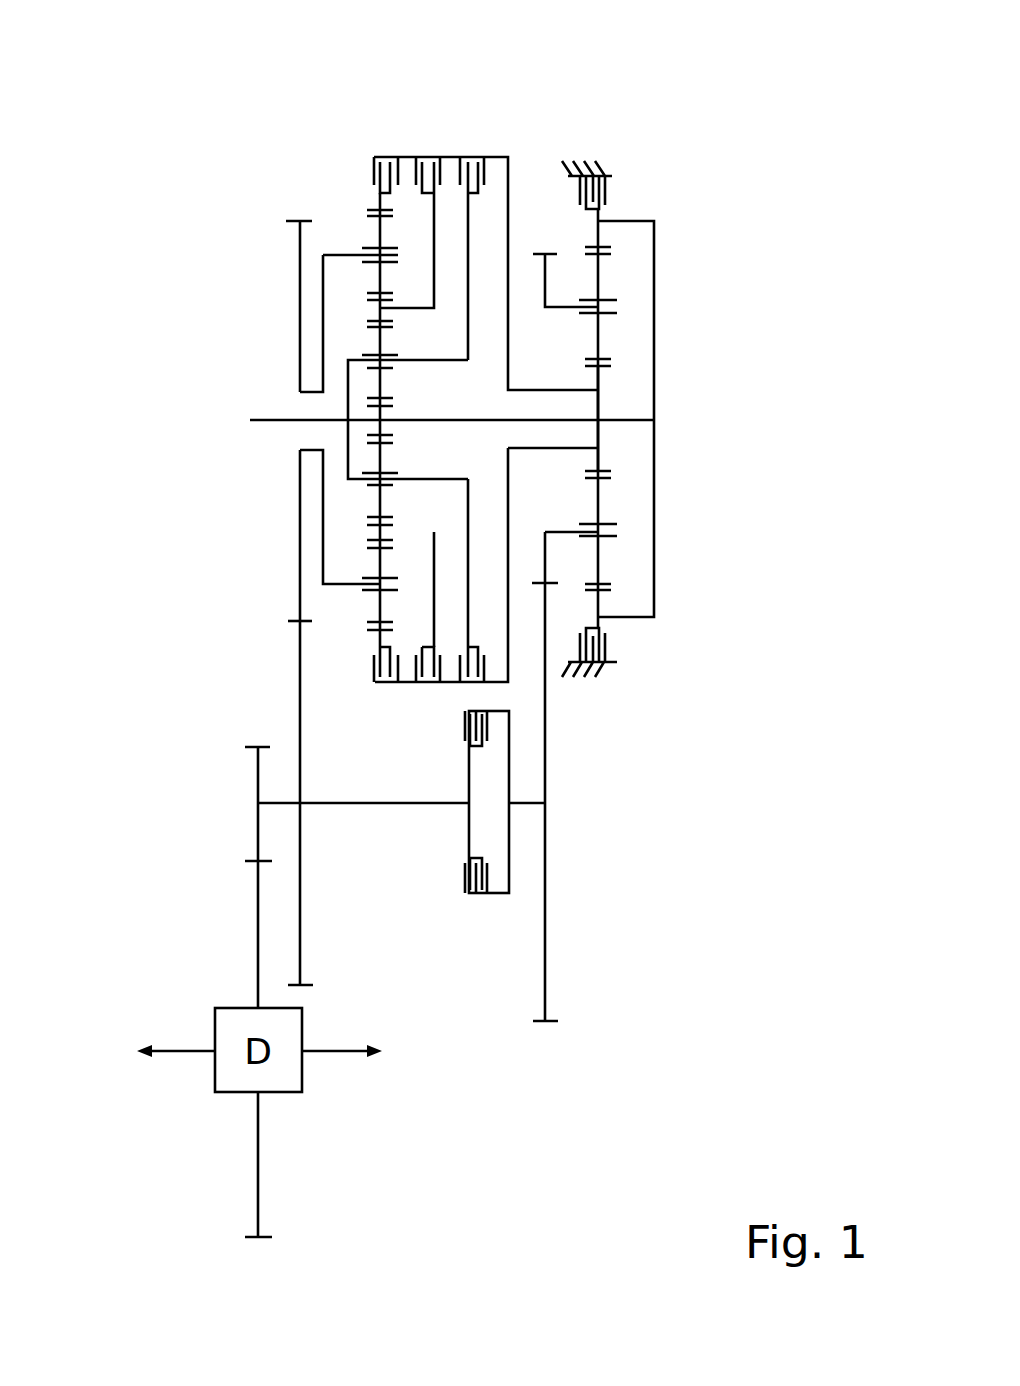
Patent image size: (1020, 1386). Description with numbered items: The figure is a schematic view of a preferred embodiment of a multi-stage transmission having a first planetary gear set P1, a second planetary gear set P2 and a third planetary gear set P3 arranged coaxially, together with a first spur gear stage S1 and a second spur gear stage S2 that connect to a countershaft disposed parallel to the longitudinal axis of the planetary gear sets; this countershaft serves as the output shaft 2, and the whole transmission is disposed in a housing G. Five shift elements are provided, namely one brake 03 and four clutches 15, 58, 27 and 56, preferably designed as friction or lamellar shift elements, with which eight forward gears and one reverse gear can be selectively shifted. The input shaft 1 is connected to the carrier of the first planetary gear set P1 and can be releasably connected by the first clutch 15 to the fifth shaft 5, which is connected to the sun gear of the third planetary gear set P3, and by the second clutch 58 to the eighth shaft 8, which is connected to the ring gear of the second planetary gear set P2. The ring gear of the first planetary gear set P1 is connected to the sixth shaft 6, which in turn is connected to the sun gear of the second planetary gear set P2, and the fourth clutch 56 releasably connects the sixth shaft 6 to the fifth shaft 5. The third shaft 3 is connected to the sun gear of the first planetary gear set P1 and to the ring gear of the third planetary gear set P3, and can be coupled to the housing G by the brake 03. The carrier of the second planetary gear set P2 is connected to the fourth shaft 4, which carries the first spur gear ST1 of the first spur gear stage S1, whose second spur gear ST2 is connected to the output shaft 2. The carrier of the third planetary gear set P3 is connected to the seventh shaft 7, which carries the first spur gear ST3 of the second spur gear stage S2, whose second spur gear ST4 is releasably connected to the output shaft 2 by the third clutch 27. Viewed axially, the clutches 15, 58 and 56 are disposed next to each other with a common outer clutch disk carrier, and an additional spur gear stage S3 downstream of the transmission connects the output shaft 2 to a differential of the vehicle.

The second planetary gear set P2 is at (366, 236).
The eighth shaft 8 is at (377, 200).
The second clutch 58 is at (378, 158).
The fourth clutch 56 is at (433, 158).
The first clutch 15 is at (485, 158).
The first spur gear of the second spur gear stage ST3 is at (538, 250).
The housing G is at (598, 163).
The first spur gear of the first spur gear stage ST1 is at (300, 218).
The fourth shaft 4 is at (298, 255).
The sixth shaft 6 is at (372, 283).
The input shaft 1 is at (360, 362).
The first planetary gear set P1 is at (368, 428).
The first spur gear stage S1 is at (282, 615).
The additional spur gear stage S3 is at (243, 858).
The brake 03 is at (608, 190).
The third shaft 3 is at (655, 245).
The seventh shaft 7 is at (547, 277).
The third planetary gear set P3 is at (610, 331).
The fifth shaft 5 is at (600, 380).
The second spur gear stage S2 is at (568, 581).
The third clutch 27 is at (488, 727).
The second spur gear of the first spur gear stage ST2 is at (310, 988).
The output shaft 2 is at (365, 803).
The second spur gear of the second spur gear stage ST4 is at (553, 1028).